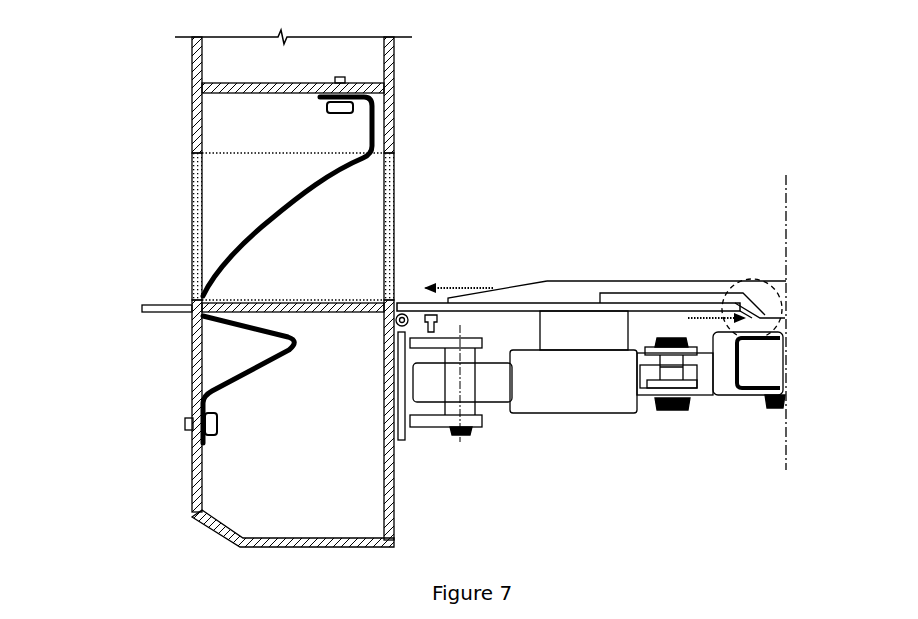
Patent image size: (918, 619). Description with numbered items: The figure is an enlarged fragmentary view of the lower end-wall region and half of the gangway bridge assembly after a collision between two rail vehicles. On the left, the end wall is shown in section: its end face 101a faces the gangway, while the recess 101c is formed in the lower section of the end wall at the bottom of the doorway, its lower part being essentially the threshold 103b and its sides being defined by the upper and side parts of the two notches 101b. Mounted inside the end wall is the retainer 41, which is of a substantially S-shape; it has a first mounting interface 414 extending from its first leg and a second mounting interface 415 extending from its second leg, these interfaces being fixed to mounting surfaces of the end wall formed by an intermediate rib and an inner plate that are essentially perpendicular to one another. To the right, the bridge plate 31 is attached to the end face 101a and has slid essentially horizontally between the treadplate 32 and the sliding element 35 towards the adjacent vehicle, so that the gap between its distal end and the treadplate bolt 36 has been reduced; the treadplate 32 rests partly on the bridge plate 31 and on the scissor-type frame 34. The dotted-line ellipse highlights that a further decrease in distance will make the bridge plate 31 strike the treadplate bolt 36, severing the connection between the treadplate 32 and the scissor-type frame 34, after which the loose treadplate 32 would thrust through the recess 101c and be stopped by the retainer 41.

The first mounting interface 414 is at (320, 69).
The recess 101c is at (260, 148).
The retainer 41 is at (240, 230).
The notches 101b is at (188, 258).
The threshold 103b is at (243, 298).
The second mounting interface 415 is at (165, 428).
The end face 101a is at (388, 482).
The treadplate 32 is at (547, 303).
The bridge plate 31 is at (667, 311).
The sliding element 35 is at (565, 342).
The scissor-type frame 34 is at (615, 397).
The treadplate bolt 36 is at (762, 408).